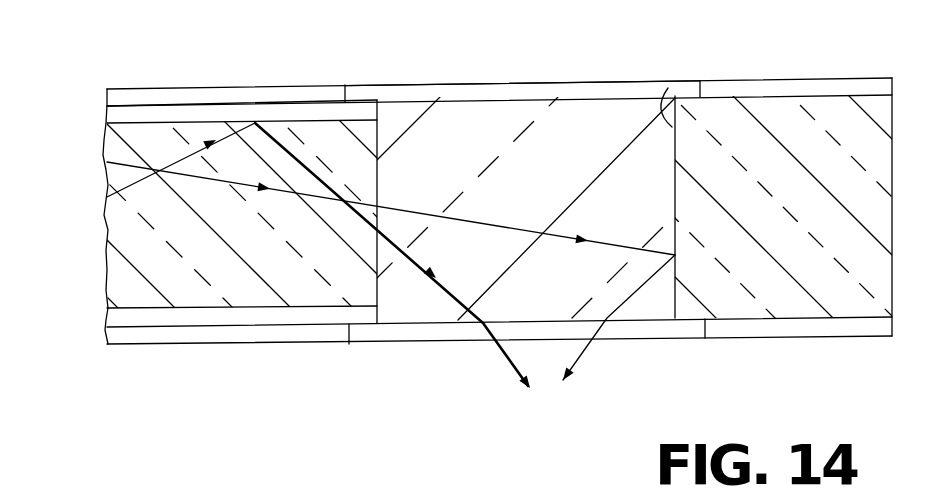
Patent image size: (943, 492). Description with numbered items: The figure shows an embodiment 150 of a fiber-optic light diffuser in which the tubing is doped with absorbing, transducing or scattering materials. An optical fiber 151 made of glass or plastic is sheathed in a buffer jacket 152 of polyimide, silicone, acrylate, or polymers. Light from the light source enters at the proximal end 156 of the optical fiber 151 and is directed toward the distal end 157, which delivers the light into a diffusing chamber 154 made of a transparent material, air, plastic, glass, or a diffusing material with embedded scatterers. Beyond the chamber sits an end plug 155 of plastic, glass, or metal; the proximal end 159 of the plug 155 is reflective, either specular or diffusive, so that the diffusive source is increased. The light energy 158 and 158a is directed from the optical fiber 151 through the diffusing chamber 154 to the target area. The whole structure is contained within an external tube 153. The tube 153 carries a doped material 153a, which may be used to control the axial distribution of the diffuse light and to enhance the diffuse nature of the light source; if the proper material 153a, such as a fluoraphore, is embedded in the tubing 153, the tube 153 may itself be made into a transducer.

The embodiment 150 is at (222, 38).
The optical fiber 151 is at (146, 258).
The buffer jacket 152 is at (107, 122).
The external tube 153 is at (283, 90).
The doped material 153a is at (473, 92).
The diffusing chamber 154 is at (577, 174).
The end plug 155 is at (793, 122).
The proximal end 156 is at (107, 233).
The distal end 157 is at (377, 290).
The light energy 158 is at (582, 378).
The light energy 158a is at (506, 368).
The proximal end of the plug 159 is at (666, 88).